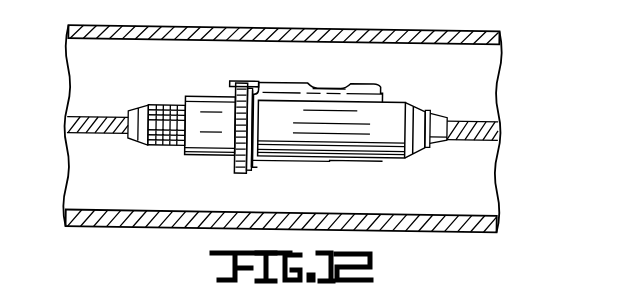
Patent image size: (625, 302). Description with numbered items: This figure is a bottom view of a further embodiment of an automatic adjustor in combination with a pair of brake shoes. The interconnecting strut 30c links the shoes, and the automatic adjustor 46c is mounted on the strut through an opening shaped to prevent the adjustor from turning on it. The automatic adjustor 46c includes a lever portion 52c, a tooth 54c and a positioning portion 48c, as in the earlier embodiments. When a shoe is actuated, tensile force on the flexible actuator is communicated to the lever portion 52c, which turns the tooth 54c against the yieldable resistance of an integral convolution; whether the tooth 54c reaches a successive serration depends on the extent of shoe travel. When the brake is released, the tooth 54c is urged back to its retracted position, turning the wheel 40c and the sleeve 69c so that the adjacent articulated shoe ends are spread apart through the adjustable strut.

The interconnecting strut 30c is at (388, 114).
The wheel 40c is at (236, 173).
The automatic adjustor 46c is at (289, 83).
The positioning portion 48c is at (253, 166).
The lever portion 52c is at (363, 86).
The tooth 54c is at (242, 82).
The sleeve 69c is at (212, 146).